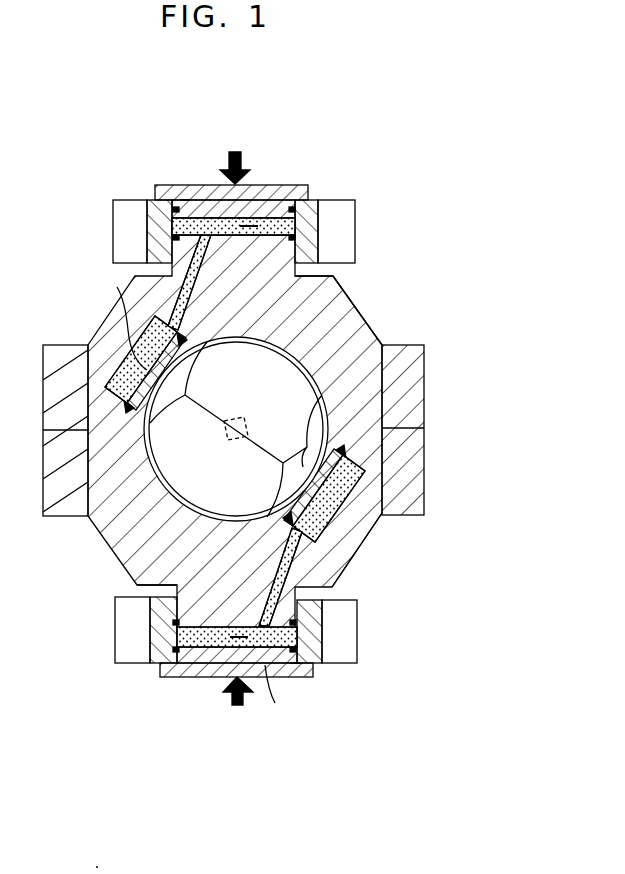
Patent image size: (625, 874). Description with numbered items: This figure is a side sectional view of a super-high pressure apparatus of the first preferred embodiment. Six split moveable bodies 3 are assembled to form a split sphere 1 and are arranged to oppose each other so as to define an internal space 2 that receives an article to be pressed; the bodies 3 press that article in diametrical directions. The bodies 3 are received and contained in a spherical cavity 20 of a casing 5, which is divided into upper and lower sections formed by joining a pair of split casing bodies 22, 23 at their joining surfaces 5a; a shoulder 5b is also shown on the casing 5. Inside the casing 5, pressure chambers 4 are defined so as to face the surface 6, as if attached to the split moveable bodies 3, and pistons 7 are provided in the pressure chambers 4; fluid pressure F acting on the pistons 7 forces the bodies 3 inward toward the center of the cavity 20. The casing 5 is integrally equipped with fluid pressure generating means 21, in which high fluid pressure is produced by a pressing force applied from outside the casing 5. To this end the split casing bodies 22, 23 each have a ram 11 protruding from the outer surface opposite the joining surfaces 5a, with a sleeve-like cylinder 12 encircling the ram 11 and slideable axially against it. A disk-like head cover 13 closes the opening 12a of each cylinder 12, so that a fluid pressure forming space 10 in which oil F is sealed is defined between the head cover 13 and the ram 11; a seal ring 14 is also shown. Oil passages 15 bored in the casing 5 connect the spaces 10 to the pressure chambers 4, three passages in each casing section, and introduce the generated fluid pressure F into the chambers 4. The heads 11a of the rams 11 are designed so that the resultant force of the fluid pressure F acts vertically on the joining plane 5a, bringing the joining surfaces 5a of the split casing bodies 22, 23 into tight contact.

The split sphere 1 is at (115, 545).
The internal space 2 is at (238, 442).
The split moveable bodies 3 is at (280, 372).
The pressure chambers 4 is at (125, 345).
The casing 5 is at (445, 480).
The joining surfaces 5a is at (425, 418).
The shoulder 5b is at (323, 274).
The surface 6 is at (218, 338).
The pistons 7 is at (135, 388).
The fluid pressure forming spaces 10 is at (255, 212).
The rams 11 is at (300, 248).
The heads of the rams 11a is at (248, 222).
The sleeve-like cylinders 12 is at (147, 207).
The openings of the cylinders 12a is at (183, 193).
The head covers 13 is at (285, 190).
The seal ring 14 is at (325, 199).
The oil passages 15 is at (172, 245).
The spherical cavity 20 is at (385, 373).
The fluid pressure generating means 21 is at (332, 174).
The split casing body 22 is at (353, 298).
The split casing body 23 is at (362, 548).
The fluid pressure F is at (192, 499).